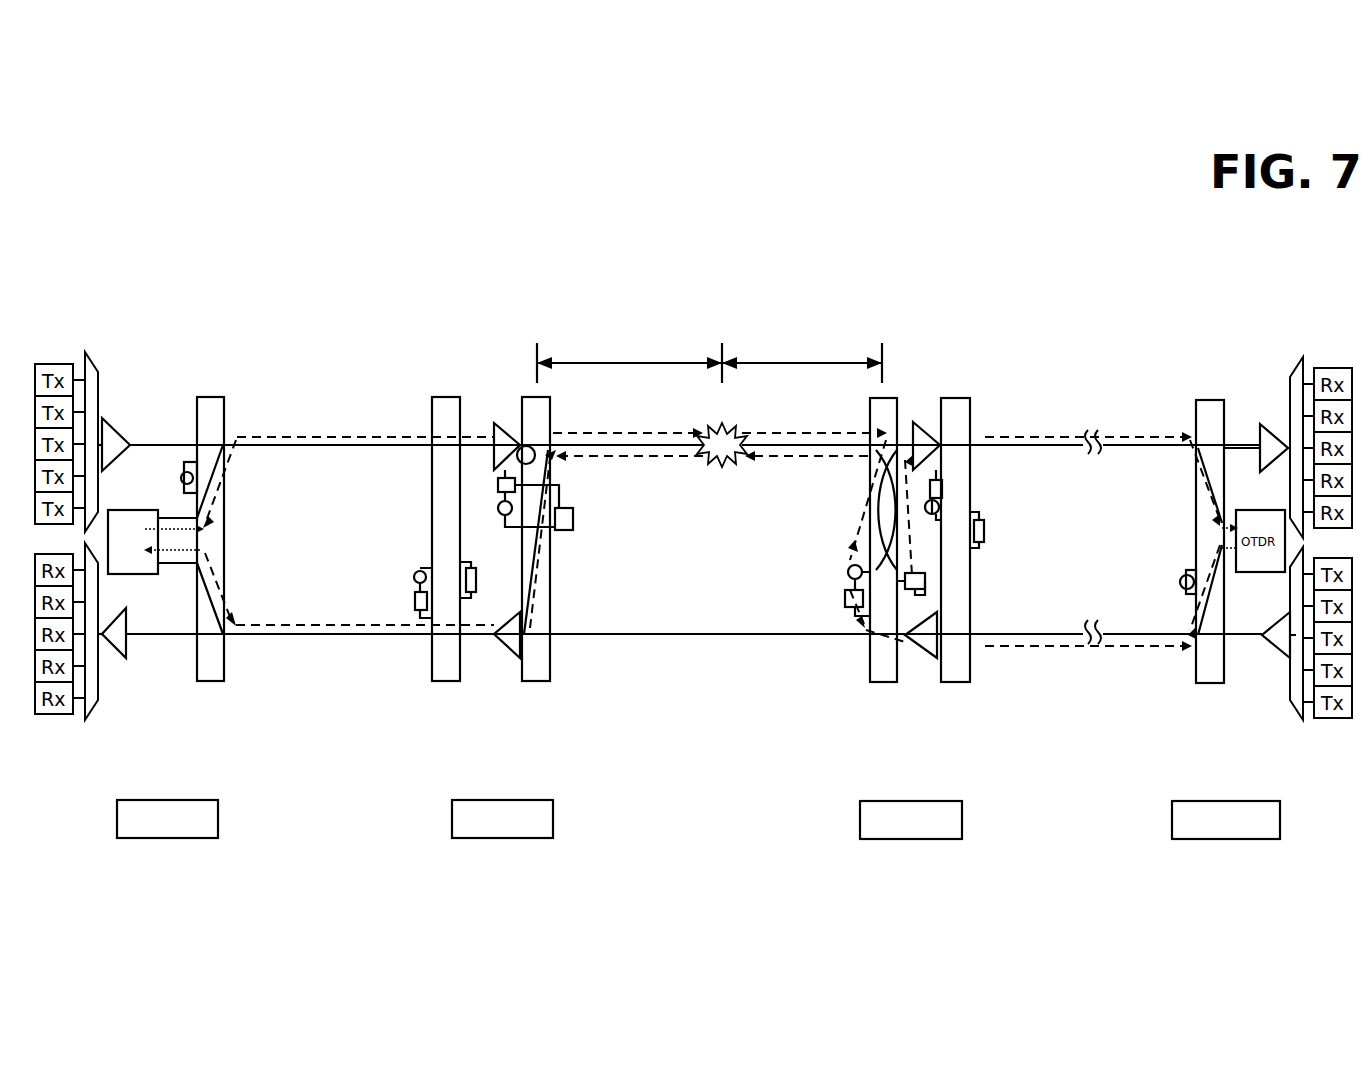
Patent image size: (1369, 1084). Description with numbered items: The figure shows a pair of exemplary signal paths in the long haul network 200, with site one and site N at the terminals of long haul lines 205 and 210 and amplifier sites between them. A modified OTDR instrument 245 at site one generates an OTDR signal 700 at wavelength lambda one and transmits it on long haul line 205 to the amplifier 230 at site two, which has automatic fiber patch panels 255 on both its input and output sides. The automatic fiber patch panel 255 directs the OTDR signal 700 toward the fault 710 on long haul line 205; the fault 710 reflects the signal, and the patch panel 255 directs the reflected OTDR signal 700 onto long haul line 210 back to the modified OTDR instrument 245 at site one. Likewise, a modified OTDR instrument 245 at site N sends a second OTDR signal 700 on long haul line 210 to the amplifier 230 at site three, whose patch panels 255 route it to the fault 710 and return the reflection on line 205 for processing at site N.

The long haul network 200 is at (278, 183).
The long haul line 205 is at (232, 356).
The long haul line 210 is at (250, 692).
The amplifier 230 is at (516, 652).
The modified OTDR instrument 245 is at (136, 510).
The automatic fiber patch panel 255 is at (442, 397).
The OTDR signal 700 is at (342, 437).
The fault 710 is at (716, 470).